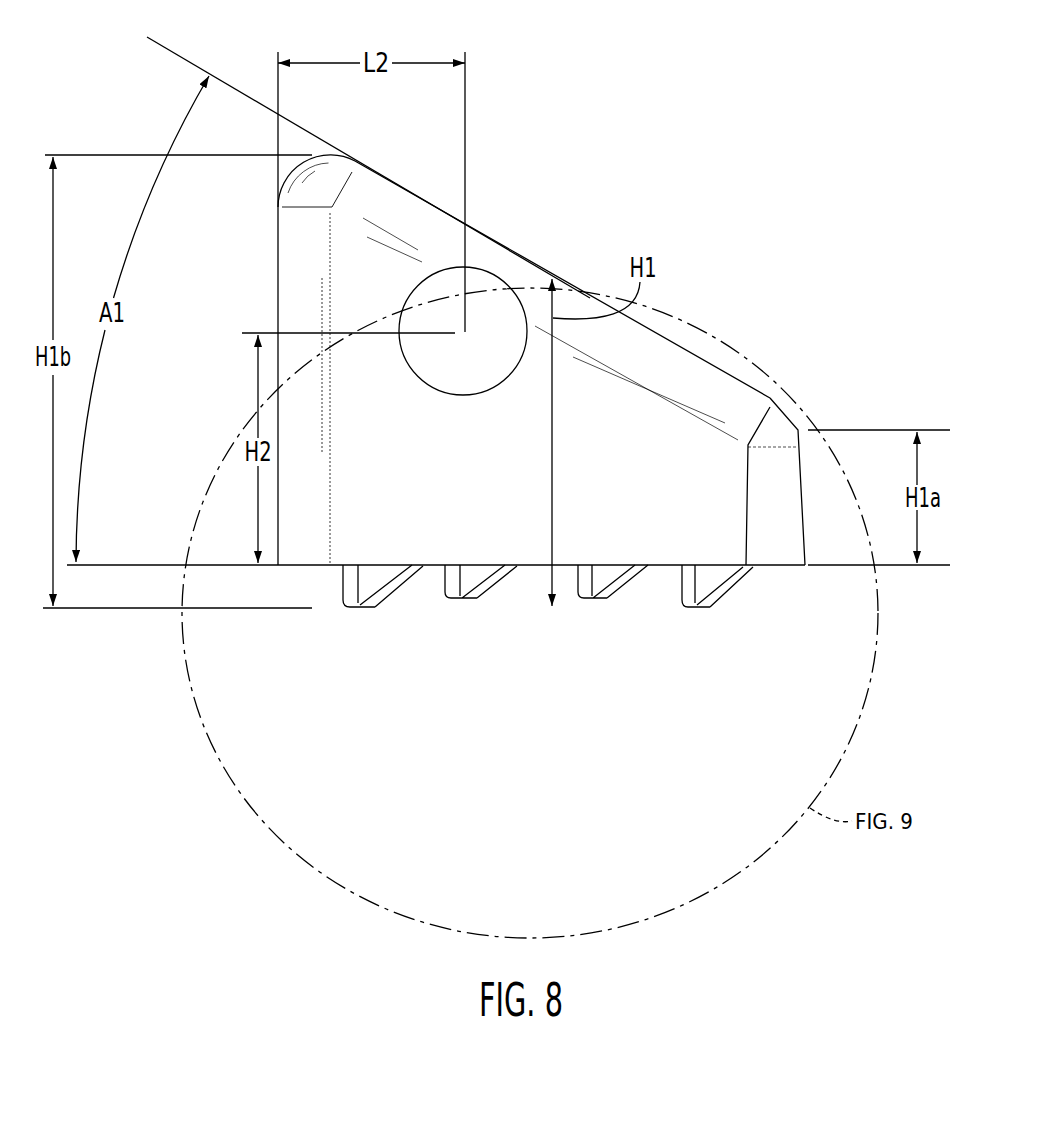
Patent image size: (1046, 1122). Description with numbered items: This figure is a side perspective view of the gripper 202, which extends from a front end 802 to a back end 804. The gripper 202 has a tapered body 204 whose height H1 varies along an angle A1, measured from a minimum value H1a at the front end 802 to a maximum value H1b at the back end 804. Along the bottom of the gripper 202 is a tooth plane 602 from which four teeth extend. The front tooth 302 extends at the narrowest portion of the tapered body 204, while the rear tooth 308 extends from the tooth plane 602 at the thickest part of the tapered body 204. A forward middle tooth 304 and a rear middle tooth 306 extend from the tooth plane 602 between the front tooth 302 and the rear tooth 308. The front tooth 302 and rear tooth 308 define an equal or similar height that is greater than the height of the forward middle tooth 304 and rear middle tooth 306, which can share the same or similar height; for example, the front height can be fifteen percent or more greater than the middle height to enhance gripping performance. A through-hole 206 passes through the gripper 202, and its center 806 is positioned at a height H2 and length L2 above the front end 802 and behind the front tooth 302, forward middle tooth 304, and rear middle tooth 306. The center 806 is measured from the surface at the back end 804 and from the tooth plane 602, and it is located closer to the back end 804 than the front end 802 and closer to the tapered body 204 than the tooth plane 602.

The gripper 202 is at (755, 400).
The tapered body 204 is at (657, 327).
The through-hole 206 is at (516, 292).
The front tooth 302 is at (720, 598).
The forward middle tooth 304 is at (617, 590).
The rear middle tooth 306 is at (465, 598).
The rear tooth 308 is at (375, 607).
The tooth plane 602 is at (520, 568).
The front end 802 is at (822, 458).
The back end 804 is at (233, 627).
The center 806 is at (503, 315).